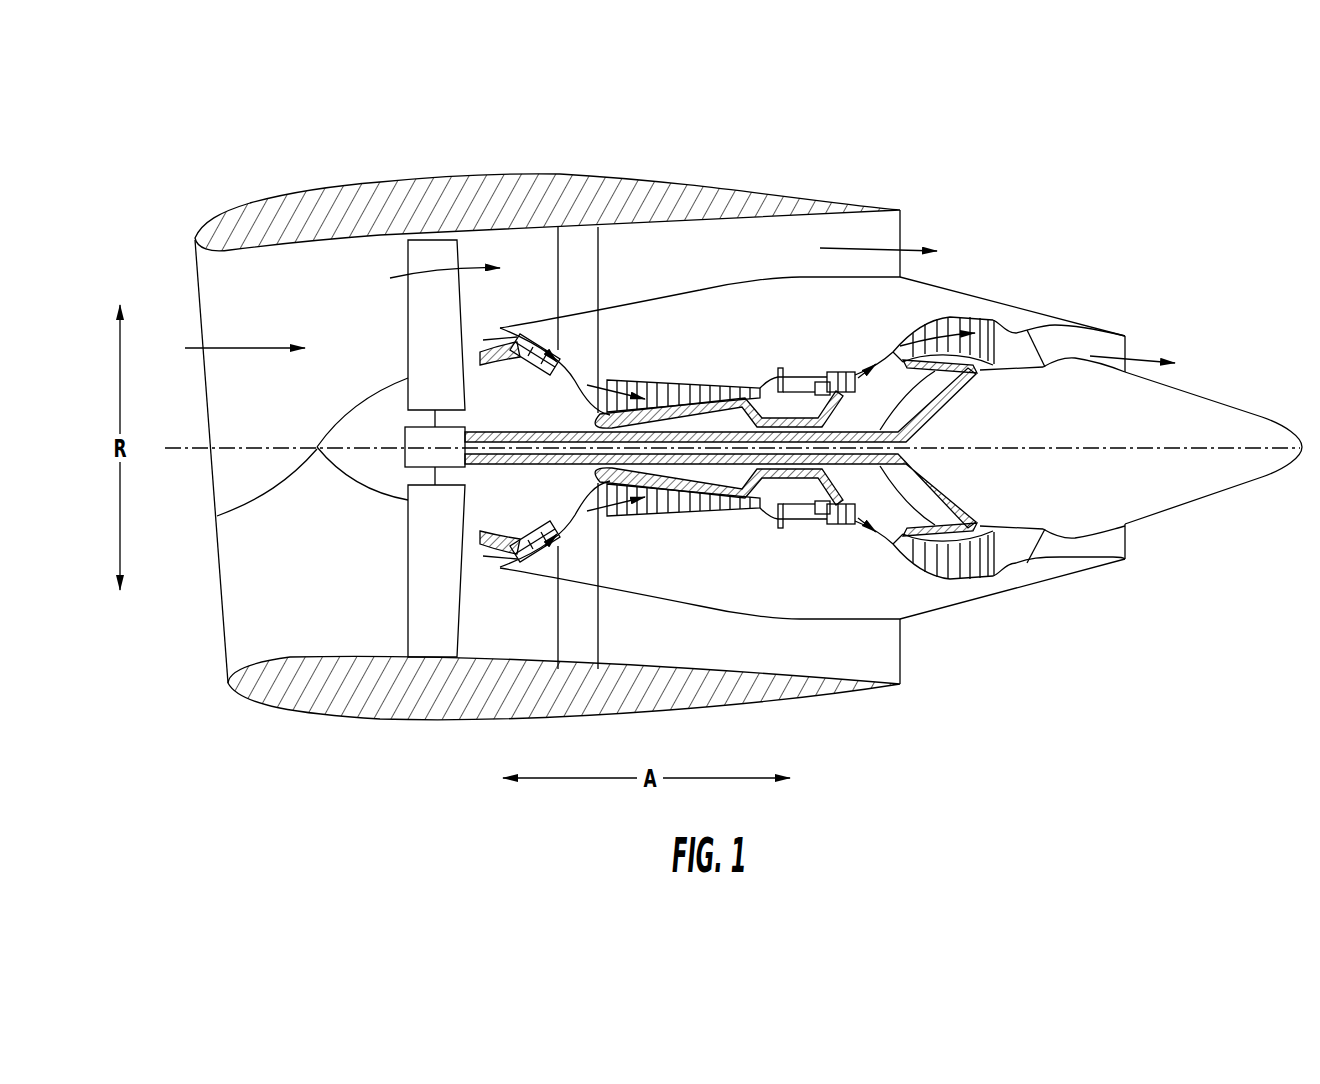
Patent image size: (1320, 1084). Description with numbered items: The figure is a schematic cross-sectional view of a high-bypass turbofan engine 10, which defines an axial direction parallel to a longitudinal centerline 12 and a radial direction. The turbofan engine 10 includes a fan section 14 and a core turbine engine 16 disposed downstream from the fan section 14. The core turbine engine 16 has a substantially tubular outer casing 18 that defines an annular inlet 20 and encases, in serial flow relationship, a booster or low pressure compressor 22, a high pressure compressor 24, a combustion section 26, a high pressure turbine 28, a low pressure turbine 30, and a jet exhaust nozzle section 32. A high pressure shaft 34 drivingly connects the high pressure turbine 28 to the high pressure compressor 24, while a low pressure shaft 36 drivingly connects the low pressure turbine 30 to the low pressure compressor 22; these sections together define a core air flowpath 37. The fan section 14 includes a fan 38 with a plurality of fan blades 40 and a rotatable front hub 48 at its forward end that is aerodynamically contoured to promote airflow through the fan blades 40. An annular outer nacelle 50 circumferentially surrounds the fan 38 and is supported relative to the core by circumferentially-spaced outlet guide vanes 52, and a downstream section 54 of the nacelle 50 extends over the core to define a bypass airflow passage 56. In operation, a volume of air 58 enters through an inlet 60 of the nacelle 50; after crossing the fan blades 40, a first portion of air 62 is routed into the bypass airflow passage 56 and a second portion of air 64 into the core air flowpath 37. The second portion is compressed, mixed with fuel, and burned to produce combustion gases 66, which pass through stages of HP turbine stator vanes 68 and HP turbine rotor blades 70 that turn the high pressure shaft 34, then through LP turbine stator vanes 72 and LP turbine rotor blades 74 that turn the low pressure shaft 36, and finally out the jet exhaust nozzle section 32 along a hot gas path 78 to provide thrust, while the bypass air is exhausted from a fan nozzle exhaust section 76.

The turbofan engine 10 is at (1041, 190).
The longitudinal centerline 12 is at (1066, 447).
The fan section 14 is at (365, 262).
The core turbine engine 16 is at (718, 333).
The outer casing 18 is at (770, 620).
The annular inlet 20 is at (495, 556).
The low pressure compressor 22 is at (560, 511).
The high pressure compressor 24 is at (627, 513).
The combustion section 26 is at (800, 517).
The high pressure turbine 28 is at (888, 520).
The low pressure turbine 30 is at (985, 577).
The jet exhaust nozzle section 32 is at (1043, 555).
The high pressure shaft 34 is at (836, 406).
The low pressure shaft 36 is at (938, 410).
The core air flowpath 37 is at (590, 512).
The fan 38 is at (372, 498).
The fan blades 40 is at (408, 598).
The rotatable front hub 48 is at (218, 515).
The outer nacelle 50 is at (455, 718).
The outlet guide vanes 52 is at (598, 257).
The downstream section of the nacelle 54 is at (845, 206).
The bypass airflow passage 56 is at (748, 267).
The volume of air 58 is at (248, 347).
The inlet 60 is at (228, 662).
The first portion of air 62 is at (424, 273).
The second portion of air 64 is at (495, 332).
The combustion gases 66 is at (930, 333).
The HP turbine stator vanes 68 is at (810, 525).
The HP turbine rotor blades 70 is at (840, 497).
The LP turbine stator vanes 72 is at (910, 563).
The LP turbine rotor blades 74 is at (920, 563).
The fan nozzle exhaust section 76 is at (888, 235).
The hot gas path 78 is at (878, 352).